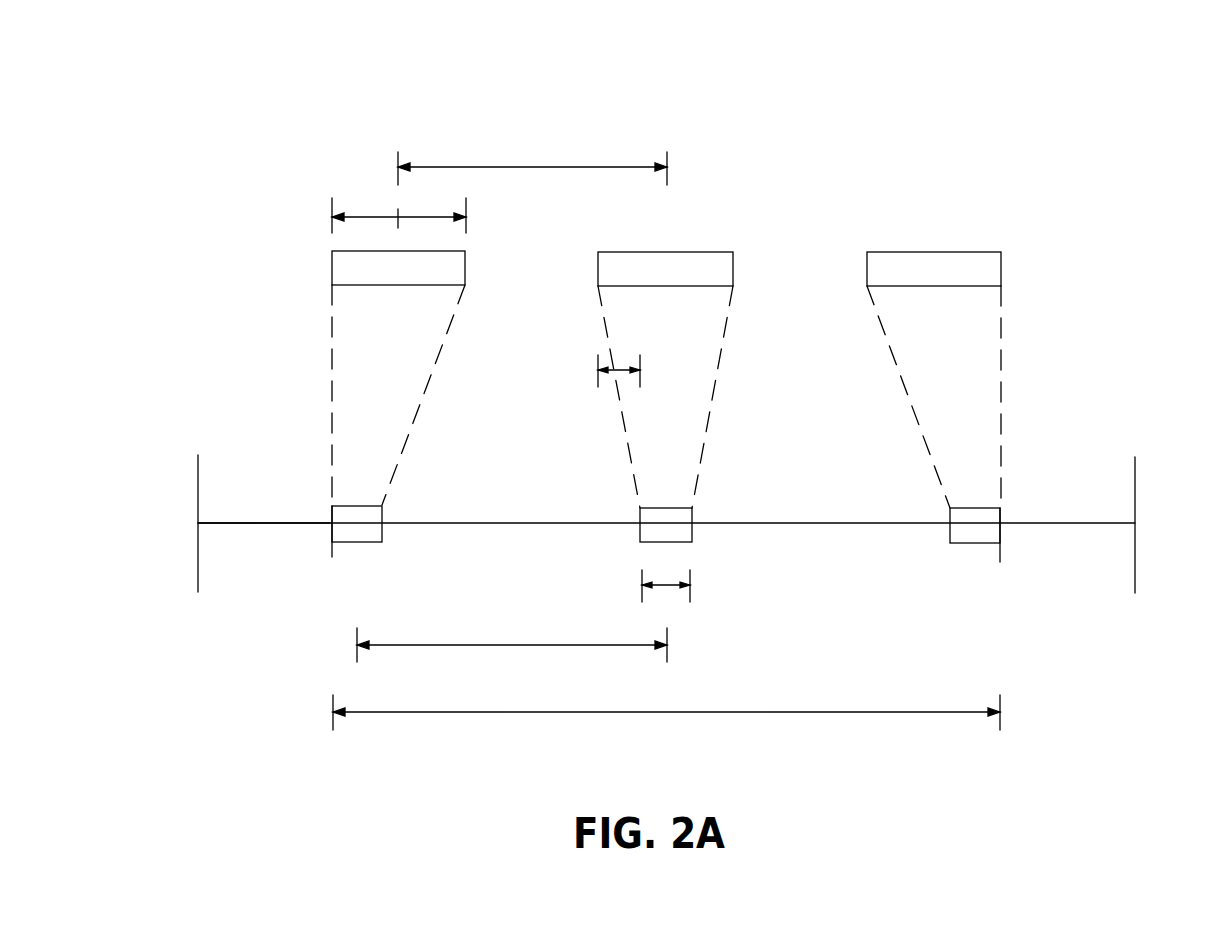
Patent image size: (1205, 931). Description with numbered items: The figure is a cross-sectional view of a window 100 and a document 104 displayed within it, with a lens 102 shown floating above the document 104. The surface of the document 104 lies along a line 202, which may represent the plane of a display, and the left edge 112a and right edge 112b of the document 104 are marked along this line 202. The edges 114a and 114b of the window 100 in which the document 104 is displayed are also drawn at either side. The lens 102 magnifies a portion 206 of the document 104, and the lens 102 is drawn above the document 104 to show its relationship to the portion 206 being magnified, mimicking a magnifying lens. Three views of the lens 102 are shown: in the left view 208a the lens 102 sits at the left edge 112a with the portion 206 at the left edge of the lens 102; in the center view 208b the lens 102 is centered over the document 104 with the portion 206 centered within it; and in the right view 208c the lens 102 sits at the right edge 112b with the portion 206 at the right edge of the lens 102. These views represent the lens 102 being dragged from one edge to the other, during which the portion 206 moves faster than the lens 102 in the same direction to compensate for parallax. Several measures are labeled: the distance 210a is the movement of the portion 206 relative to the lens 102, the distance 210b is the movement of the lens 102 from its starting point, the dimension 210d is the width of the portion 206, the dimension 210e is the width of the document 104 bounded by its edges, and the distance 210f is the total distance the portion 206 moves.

The window 100 is at (252, 181).
The lens 102 is at (465, 265).
The document 104 is at (835, 523).
The left edge 112a is at (333, 557).
The right edge 112b is at (1000, 514).
The edge of the window 114a is at (198, 455).
The edge of the window 114b is at (1135, 457).
The line 202 is at (230, 523).
The portion 206 is at (382, 548).
The view 208a is at (365, 88).
The view 208b is at (640, 88).
The view 208c is at (919, 88).
The distance 210a is at (598, 373).
The distance 210b is at (620, 168).
The dimension 210d is at (690, 590).
The dimension 210e is at (333, 217).
The distance 210f is at (568, 645).